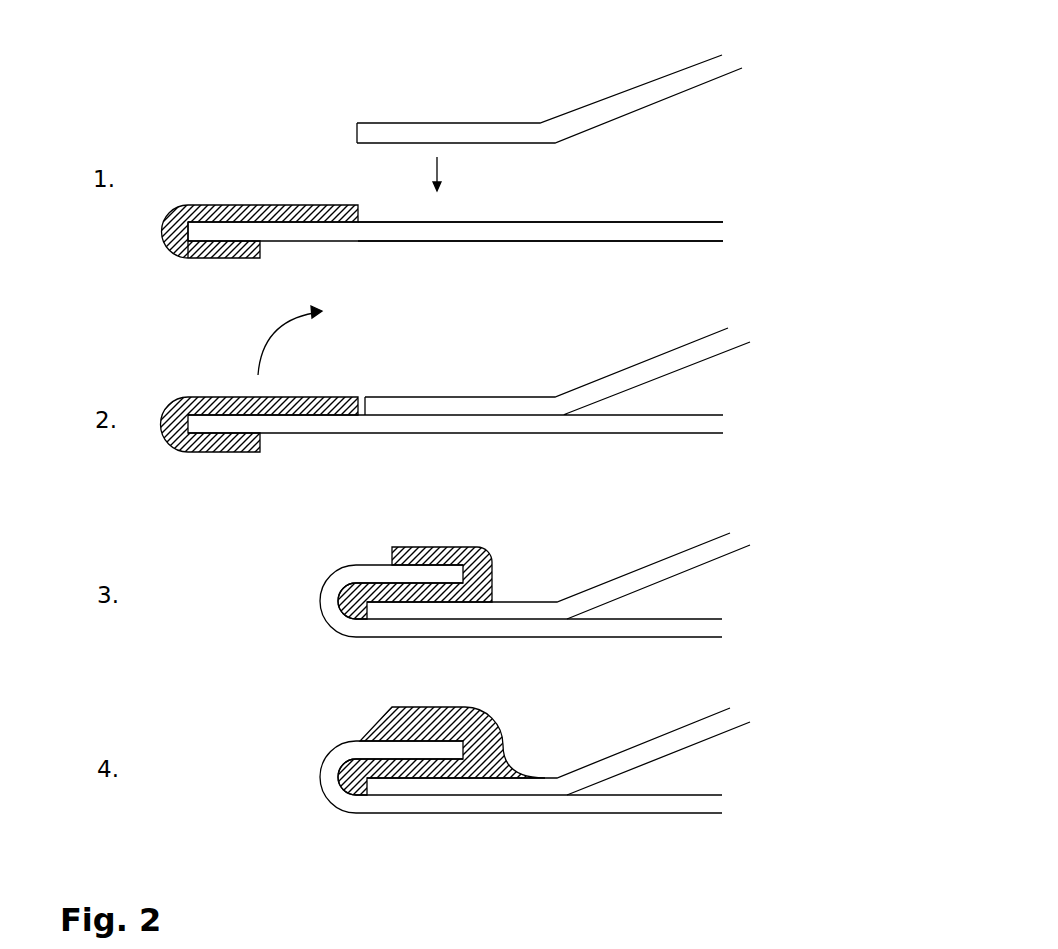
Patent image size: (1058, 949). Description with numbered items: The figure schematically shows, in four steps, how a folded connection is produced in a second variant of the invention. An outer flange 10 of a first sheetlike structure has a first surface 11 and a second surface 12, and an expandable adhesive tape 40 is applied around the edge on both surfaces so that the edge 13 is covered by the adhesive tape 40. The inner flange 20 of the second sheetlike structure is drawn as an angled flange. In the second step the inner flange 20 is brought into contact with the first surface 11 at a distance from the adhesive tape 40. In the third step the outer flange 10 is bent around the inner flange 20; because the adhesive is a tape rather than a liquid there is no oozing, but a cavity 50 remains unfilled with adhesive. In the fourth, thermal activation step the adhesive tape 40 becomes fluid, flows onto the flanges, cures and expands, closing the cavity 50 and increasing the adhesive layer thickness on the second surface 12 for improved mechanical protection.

The outer flange 10 is at (707, 233).
The first surface 11 is at (537, 221).
The second surface 12 is at (540, 241).
The edge 13 is at (173, 250).
The inner flange 20 is at (693, 73).
The expandable adhesive tape 40 is at (255, 205).
The cavity 50 is at (365, 608).